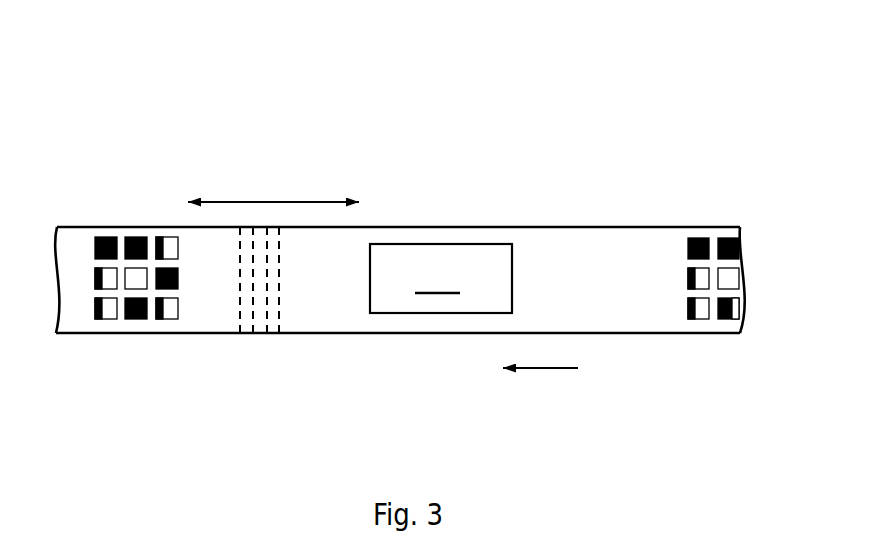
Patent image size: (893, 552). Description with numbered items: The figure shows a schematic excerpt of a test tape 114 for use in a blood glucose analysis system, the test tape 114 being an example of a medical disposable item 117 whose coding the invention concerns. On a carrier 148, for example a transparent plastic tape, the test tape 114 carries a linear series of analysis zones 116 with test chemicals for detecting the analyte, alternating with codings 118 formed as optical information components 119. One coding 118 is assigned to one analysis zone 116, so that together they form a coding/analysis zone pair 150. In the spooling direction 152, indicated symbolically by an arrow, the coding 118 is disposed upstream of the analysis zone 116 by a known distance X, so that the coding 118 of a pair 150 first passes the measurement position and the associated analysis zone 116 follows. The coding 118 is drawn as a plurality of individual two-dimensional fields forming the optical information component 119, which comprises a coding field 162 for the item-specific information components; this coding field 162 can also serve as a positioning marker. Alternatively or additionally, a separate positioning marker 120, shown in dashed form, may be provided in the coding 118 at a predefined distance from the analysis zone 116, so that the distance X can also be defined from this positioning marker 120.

The test tape 114 is at (400, 235).
The medical disposable item 117 is at (400, 235).
The coding 118 is at (216, 292).
The optical information component 119 is at (176, 223).
The coding field 162 is at (128, 227).
The positioning marker 120 is at (216, 292).
The analysis zone 116 is at (441, 278).
The carrier 148 is at (400, 235).
The coding/analysis zone pair 150 is at (303, 235).
The spooling direction 152 is at (532, 370).